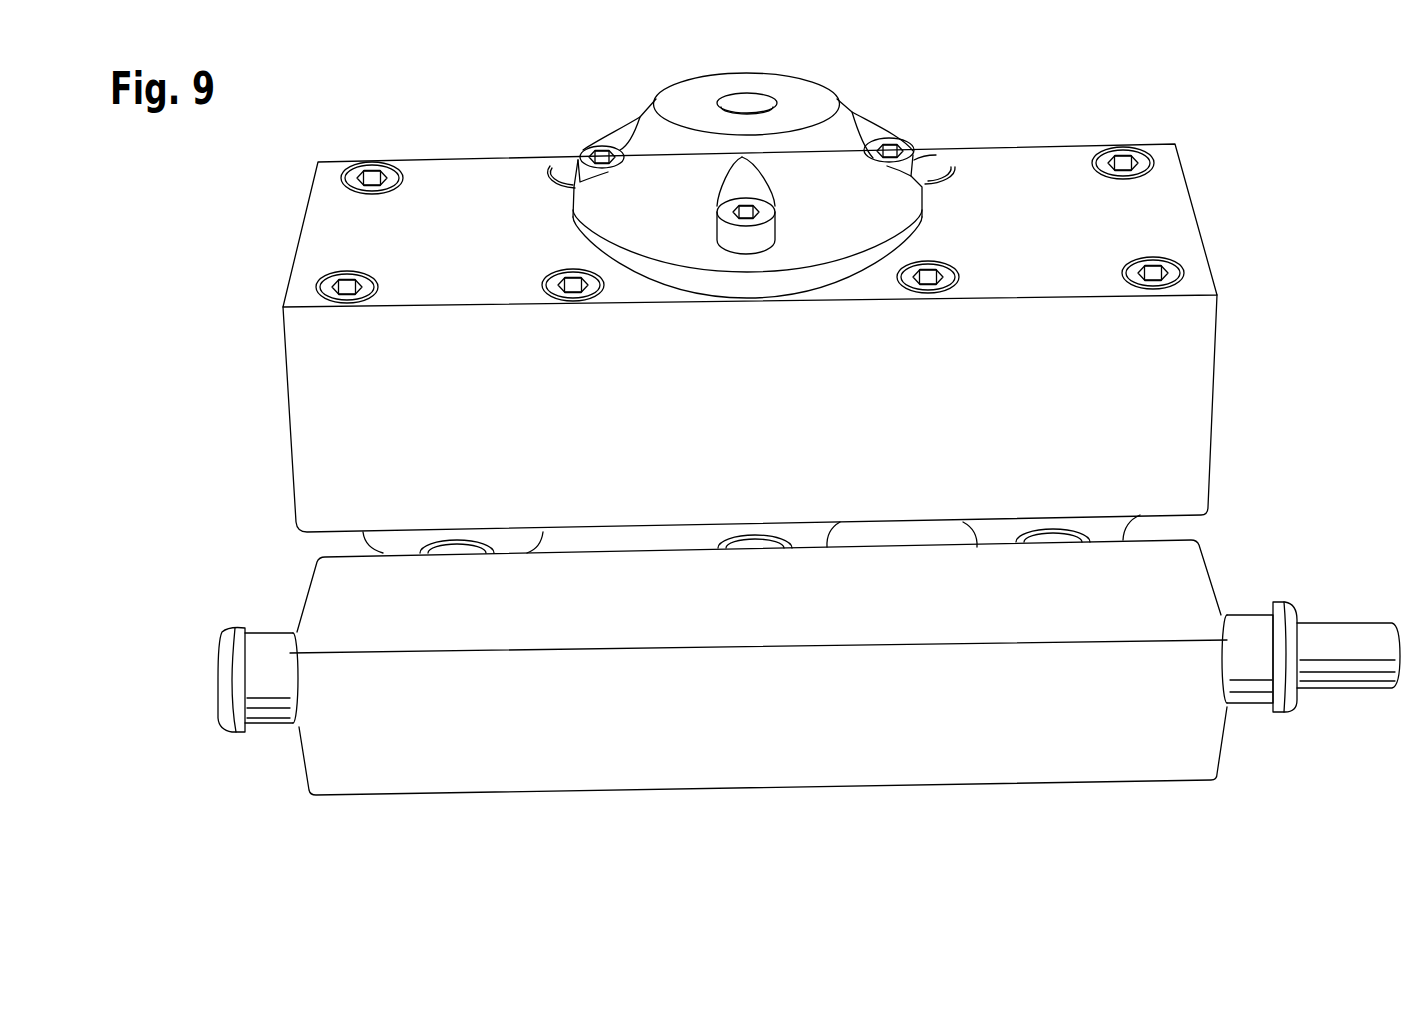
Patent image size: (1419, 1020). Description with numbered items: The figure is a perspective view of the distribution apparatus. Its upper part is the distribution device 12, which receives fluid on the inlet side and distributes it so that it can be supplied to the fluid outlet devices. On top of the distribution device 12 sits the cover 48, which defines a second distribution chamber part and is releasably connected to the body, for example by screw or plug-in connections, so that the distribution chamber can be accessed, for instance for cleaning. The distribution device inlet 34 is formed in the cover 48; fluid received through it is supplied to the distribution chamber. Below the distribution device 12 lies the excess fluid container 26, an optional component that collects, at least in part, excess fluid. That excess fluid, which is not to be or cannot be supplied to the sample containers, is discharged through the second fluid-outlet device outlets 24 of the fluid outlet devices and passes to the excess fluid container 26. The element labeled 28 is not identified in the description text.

The distribution device 12 is at (1208, 378).
The second fluid-outlet device outlets 24 is at (453, 543).
The excess fluid container 26 is at (320, 603).
The shaft 28 is at (1345, 640).
The distribution device inlet 34 is at (741, 103).
The cover 48 is at (842, 110).